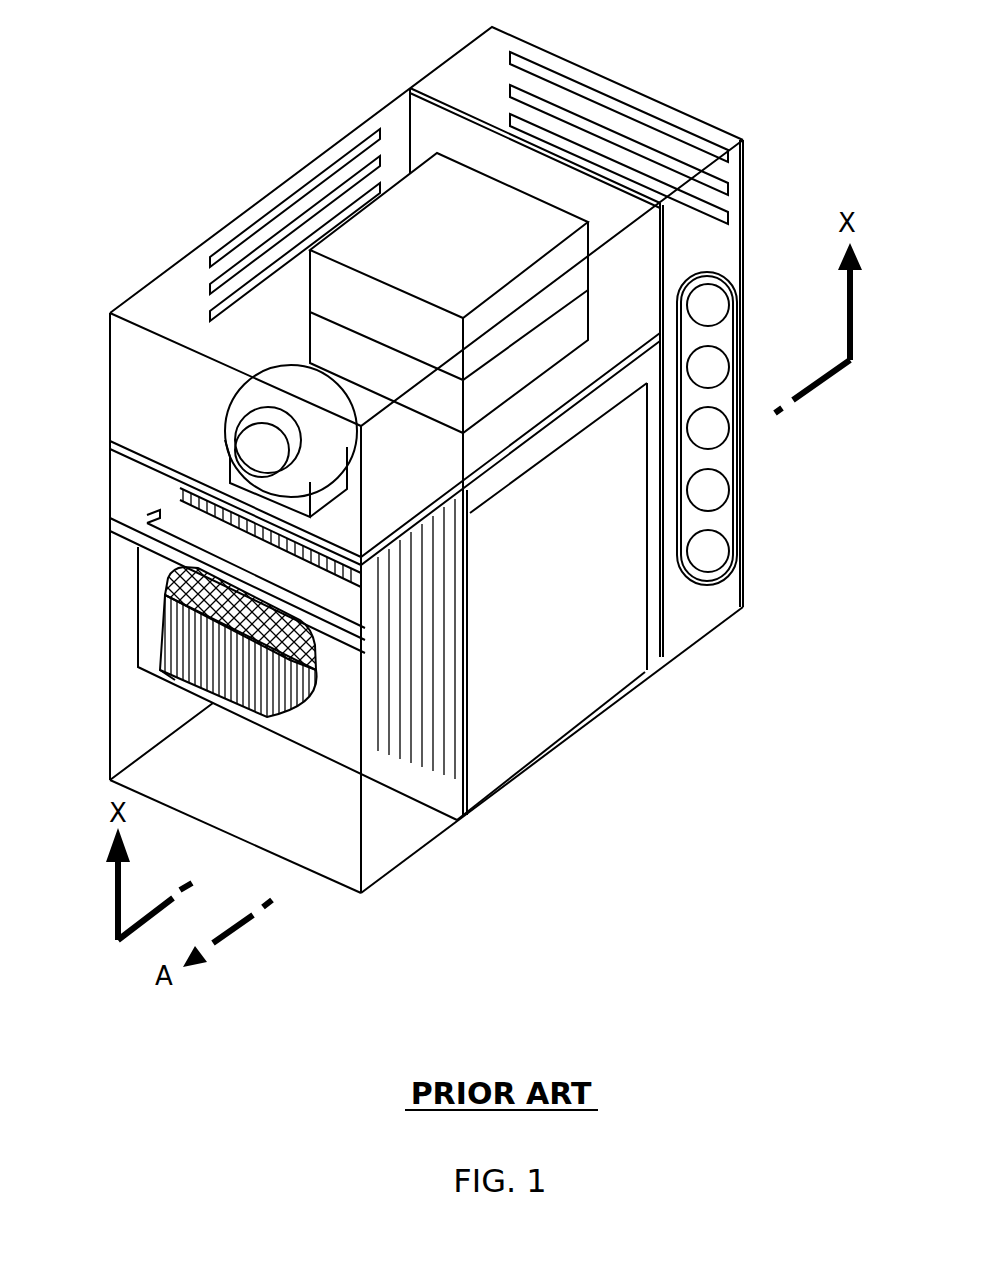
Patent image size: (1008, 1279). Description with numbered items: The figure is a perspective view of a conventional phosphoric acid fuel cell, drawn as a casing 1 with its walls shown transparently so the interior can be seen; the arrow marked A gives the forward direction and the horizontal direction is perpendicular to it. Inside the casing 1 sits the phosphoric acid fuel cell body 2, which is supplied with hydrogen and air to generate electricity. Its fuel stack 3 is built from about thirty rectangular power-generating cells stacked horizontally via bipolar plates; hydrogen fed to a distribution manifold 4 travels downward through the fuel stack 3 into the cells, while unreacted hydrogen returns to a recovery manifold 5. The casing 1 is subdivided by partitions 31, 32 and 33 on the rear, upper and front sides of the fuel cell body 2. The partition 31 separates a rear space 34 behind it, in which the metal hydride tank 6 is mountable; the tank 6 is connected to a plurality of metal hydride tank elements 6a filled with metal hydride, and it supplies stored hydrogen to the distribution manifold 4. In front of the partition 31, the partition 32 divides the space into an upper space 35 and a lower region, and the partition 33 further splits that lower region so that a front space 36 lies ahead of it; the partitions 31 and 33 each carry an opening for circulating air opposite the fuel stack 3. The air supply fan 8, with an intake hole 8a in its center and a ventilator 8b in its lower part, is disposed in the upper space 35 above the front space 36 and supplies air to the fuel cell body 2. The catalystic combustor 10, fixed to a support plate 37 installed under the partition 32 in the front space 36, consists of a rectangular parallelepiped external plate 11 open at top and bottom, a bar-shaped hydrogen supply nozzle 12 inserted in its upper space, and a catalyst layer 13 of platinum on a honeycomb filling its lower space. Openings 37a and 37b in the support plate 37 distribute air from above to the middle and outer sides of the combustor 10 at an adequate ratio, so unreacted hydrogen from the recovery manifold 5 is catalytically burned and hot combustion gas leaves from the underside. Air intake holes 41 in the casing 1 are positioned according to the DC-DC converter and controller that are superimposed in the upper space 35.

The casing 1 is at (745, 163).
The phosphoric acid fuel cell body 2 is at (598, 612).
The fuel stack 3 is at (465, 587).
The distribution manifold 4 is at (603, 397).
The recovery manifold 5 is at (625, 678).
The metal hydride tank 6 is at (740, 393).
The metal hydride tank elements 6a is at (718, 361).
The air supply fan 8 is at (238, 408).
The intake hole 8a is at (277, 383).
The ventilator 8b is at (217, 458).
The catalystic combustor 10 is at (151, 583).
The external plate 11 is at (143, 640).
The hydrogen supply nozzle 12 is at (147, 515).
The catalyst layer 13 is at (177, 685).
The partition 31 is at (432, 112).
The partition 32 is at (517, 423).
The partition 33 is at (457, 818).
The rear space 34 is at (698, 243).
The upper space 35 is at (294, 338).
The front space 36 is at (388, 835).
The support plate 37 is at (150, 497).
The opening 37a is at (432, 735).
The opening 37b is at (520, 718).
The air intake holes 41 is at (288, 207).